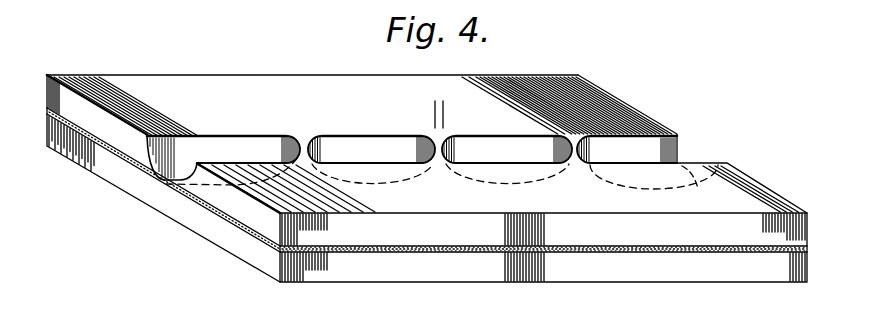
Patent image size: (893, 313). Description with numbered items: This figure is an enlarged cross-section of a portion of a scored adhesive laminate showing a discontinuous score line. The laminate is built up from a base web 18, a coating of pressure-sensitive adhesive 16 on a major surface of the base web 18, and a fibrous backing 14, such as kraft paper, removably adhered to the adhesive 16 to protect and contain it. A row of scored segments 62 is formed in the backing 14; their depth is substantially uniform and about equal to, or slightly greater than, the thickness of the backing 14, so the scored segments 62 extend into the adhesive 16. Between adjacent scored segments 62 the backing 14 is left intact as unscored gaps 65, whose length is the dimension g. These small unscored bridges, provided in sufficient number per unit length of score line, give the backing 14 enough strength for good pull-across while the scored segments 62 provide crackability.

The fibrous backing 14 is at (113, 127).
The coating of pressure-sensitive adhesive 16 is at (132, 165).
The base web 18 is at (177, 205).
The scored segments 62 is at (340, 143).
The unscored gaps 65 is at (301, 156).
The length of unscored bridges g is at (470, 112).